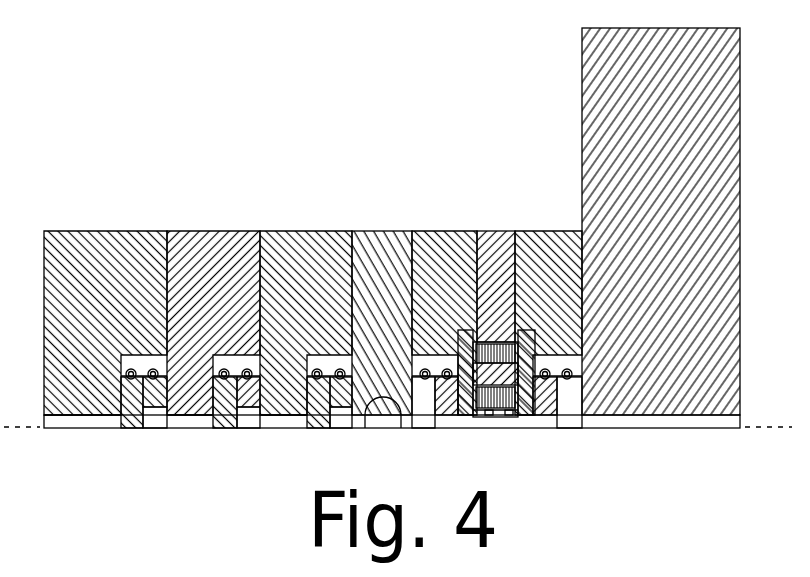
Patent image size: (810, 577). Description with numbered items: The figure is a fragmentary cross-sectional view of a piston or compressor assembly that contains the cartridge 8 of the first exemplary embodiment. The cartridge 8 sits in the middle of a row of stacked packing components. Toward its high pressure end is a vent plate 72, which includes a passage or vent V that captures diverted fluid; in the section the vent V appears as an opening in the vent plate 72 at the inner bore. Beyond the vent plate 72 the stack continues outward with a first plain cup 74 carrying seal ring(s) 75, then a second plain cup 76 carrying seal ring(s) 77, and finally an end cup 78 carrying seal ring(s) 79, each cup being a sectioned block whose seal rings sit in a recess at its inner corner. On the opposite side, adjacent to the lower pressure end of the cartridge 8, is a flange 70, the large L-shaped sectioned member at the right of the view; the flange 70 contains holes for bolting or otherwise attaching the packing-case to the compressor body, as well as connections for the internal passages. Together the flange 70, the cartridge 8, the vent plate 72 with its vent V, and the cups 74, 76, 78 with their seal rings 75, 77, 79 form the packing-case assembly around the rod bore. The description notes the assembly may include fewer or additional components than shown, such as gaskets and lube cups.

The flange 70 is at (608, 87).
The vent plate 72 is at (388, 246).
The first plain cup 74 is at (305, 246).
The second plain cup 76 is at (242, 246).
The end cup 78 is at (113, 246).
The cartridge 8 is at (485, 200).
The seal ring 75 is at (323, 420).
The seal ring 77 is at (217, 420).
The seal ring 79 is at (133, 420).
The vent V is at (382, 418).